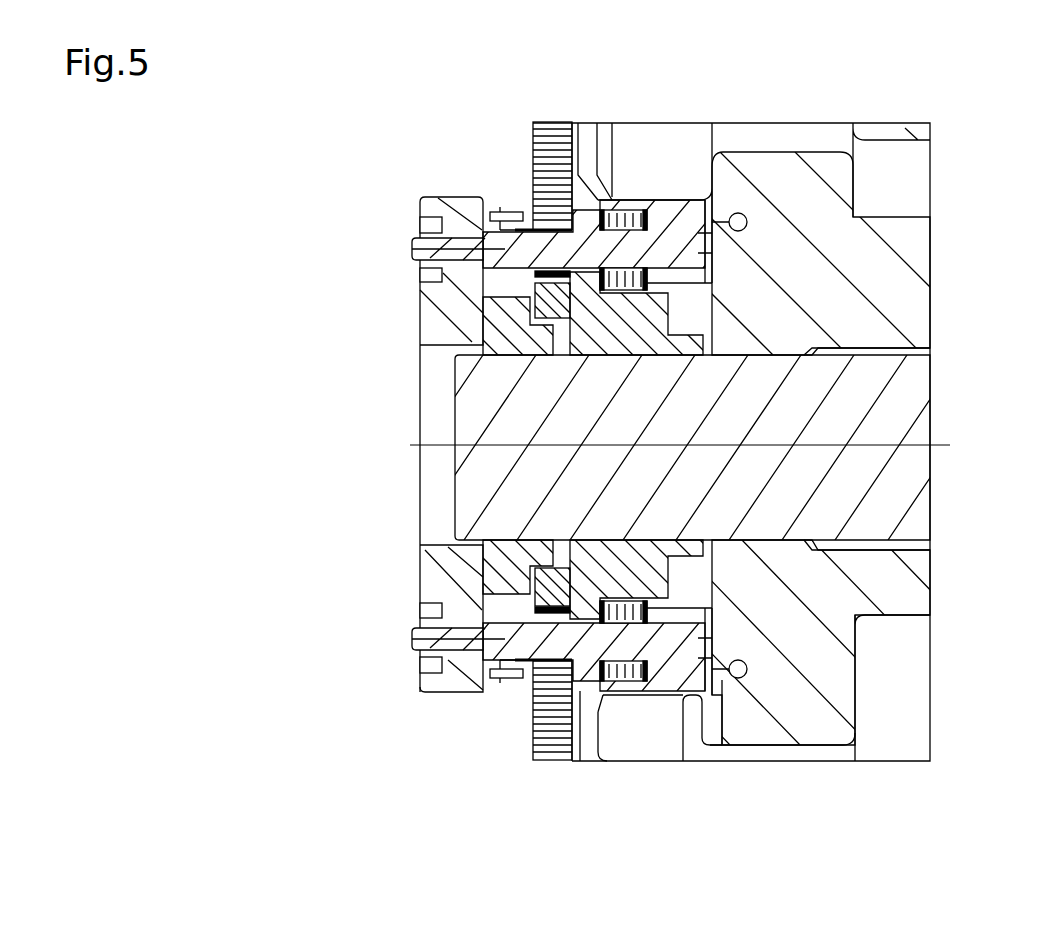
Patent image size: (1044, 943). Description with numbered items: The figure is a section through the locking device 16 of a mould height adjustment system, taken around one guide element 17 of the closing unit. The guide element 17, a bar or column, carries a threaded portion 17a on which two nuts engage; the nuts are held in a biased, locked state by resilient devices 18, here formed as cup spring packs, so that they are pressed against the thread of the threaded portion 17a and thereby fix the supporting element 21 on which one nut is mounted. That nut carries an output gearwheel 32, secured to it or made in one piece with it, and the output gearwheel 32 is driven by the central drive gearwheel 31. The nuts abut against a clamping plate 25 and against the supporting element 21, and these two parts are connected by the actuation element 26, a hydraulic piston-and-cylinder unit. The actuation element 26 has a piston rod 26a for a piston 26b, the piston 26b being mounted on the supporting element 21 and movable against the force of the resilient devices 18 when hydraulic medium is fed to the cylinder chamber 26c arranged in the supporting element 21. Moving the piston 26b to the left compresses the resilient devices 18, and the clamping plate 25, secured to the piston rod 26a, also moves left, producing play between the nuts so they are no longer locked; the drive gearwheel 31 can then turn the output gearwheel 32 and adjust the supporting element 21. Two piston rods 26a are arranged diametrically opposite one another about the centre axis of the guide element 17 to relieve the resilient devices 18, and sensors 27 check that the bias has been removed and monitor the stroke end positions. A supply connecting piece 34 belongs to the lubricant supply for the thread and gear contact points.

The locking device 16 is at (527, 518).
The guide element 17 is at (905, 433).
The threaded portion 17a is at (585, 357).
The resilient devices 18 is at (622, 215).
The supporting element 21 is at (848, 617).
The clamping plate 25 is at (458, 337).
The actuation element 26 is at (685, 698).
The piston rod 26a is at (541, 238).
The piston 26b is at (657, 662).
The cylinder chamber 26c is at (715, 213).
The sensor 27 is at (512, 212).
The drive gearwheel 31 is at (545, 123).
The output gearwheel 32 is at (523, 549).
The supply connecting piece 34 is at (742, 214).